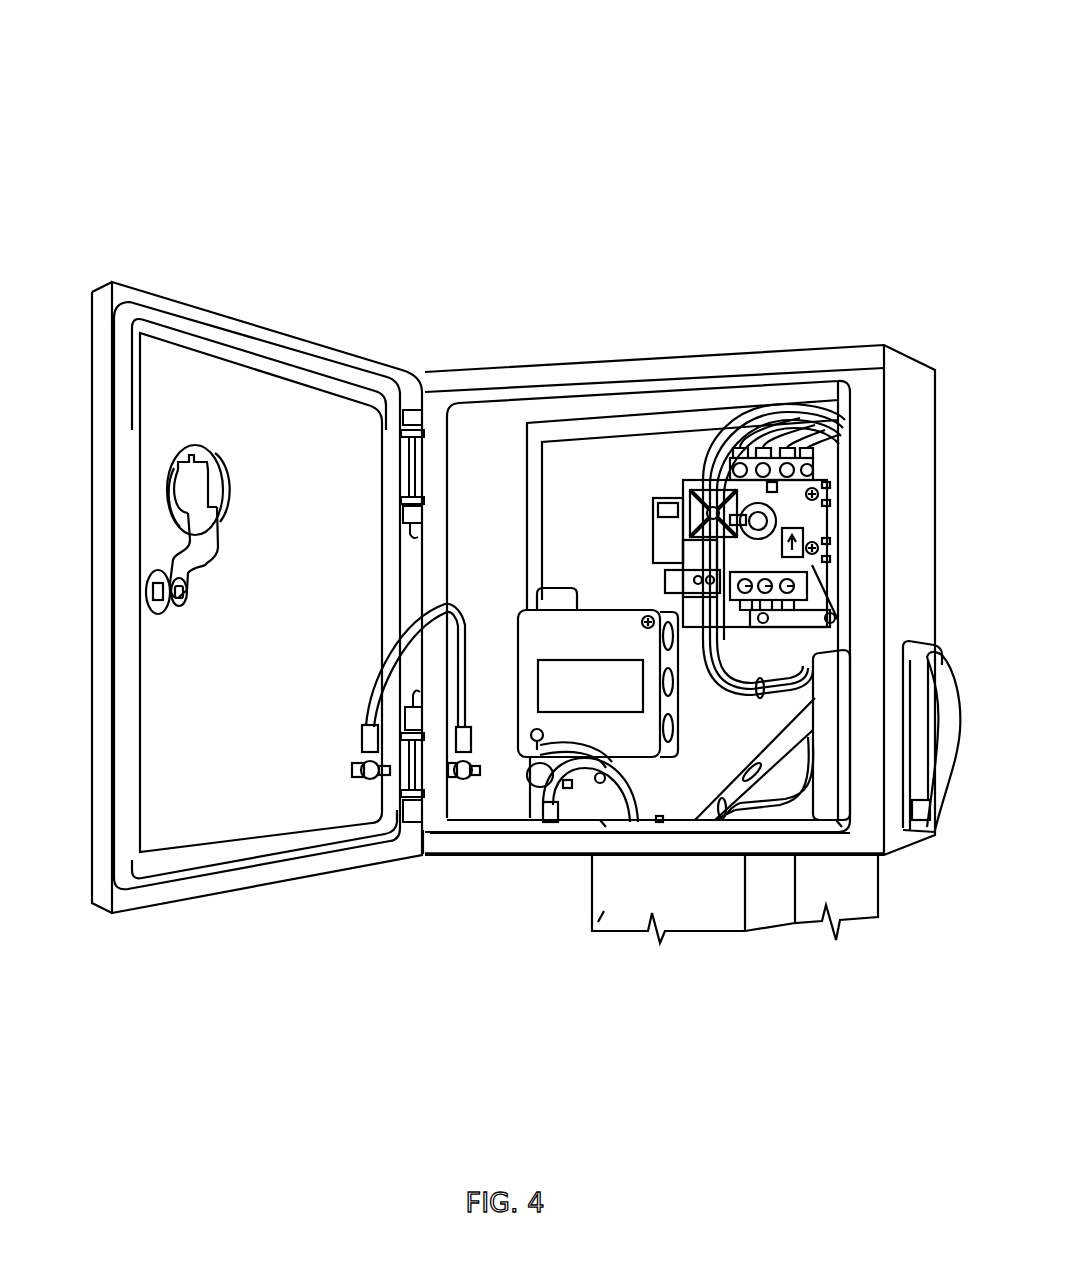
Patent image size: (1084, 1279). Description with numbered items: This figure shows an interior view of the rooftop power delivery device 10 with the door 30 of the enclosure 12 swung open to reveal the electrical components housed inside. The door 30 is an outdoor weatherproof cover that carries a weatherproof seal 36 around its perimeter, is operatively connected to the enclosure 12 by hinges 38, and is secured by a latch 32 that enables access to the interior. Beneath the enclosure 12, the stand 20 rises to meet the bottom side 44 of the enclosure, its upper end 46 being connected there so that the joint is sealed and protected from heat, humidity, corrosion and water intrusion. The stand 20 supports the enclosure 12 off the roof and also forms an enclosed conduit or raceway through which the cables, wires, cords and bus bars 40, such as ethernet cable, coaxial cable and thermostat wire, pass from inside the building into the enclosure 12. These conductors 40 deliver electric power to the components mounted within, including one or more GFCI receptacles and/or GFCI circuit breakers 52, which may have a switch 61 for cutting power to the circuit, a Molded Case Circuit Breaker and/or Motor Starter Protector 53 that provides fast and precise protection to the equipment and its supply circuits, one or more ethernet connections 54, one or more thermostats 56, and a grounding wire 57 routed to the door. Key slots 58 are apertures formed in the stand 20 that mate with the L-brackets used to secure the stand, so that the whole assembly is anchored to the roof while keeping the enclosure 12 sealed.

The rooftop power delivery device 10 is at (437, 46).
The enclosure 12 is at (897, 525).
The stand 20 is at (598, 917).
The door 30 is at (320, 340).
The latch 32 is at (222, 480).
The weatherproof seal 36 is at (372, 372).
The hinges 38 is at (416, 458).
The cables, wires, cords and bus bars 40 is at (737, 808).
The bottom side 44 is at (458, 855).
The upper end 46 is at (787, 905).
The GFCI receptacles and/or GFCI circuit breakers 52 is at (843, 790).
The Molded Case Circuit Breaker and/or Motor Starter Protector 53 is at (708, 477).
The ethernet connections 54 is at (600, 665).
The thermostats 56 is at (592, 707).
The grounding wire 57 is at (372, 690).
The key slots 58 is at (790, 493).
The switch 61 is at (943, 735).